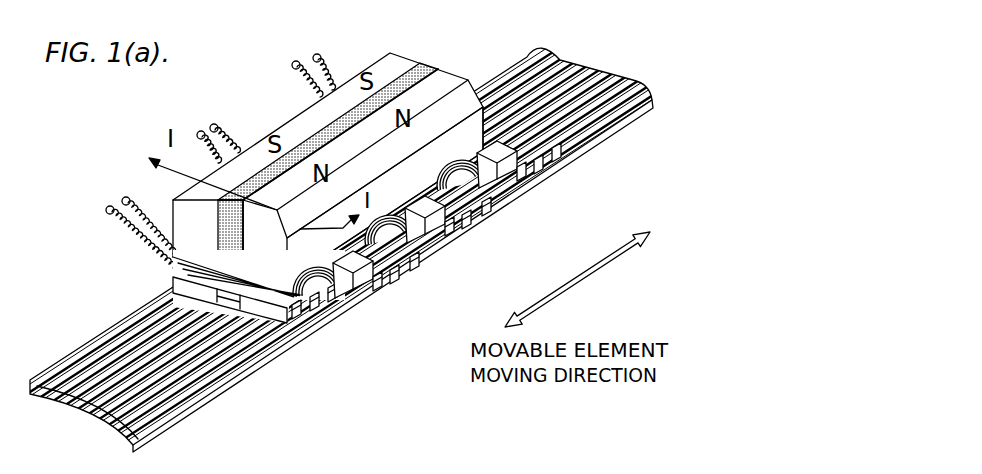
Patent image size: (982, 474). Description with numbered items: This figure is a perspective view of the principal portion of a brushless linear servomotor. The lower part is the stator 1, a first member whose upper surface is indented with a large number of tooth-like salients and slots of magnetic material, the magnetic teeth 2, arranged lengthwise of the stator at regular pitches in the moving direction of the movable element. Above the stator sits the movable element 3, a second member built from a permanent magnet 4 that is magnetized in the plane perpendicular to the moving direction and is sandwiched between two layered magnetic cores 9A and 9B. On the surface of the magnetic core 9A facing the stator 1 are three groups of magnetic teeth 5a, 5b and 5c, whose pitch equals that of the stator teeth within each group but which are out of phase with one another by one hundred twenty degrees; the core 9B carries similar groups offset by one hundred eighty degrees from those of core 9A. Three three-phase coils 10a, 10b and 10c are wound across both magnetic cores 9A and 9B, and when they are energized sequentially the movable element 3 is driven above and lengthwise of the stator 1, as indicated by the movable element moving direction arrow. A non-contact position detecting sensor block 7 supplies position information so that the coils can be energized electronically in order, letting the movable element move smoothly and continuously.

The stator 1 is at (170, 428).
The magnetic teeth 2 is at (630, 80).
The movable element 3 is at (378, 61).
The permanent magnet 4 is at (424, 57).
The magnetic teeth group 5a is at (307, 320).
The magnetic teeth group 5b is at (402, 262).
The magnetic teeth group 5c is at (453, 227).
The non-contact position detecting sensor block 7 is at (517, 137).
The magnetic core 9A is at (448, 88).
The magnetic core 9B is at (292, 128).
The three-phase coil 10a is at (277, 320).
The three-phase coil 10b is at (370, 257).
The three-phase coil 10c is at (453, 202).